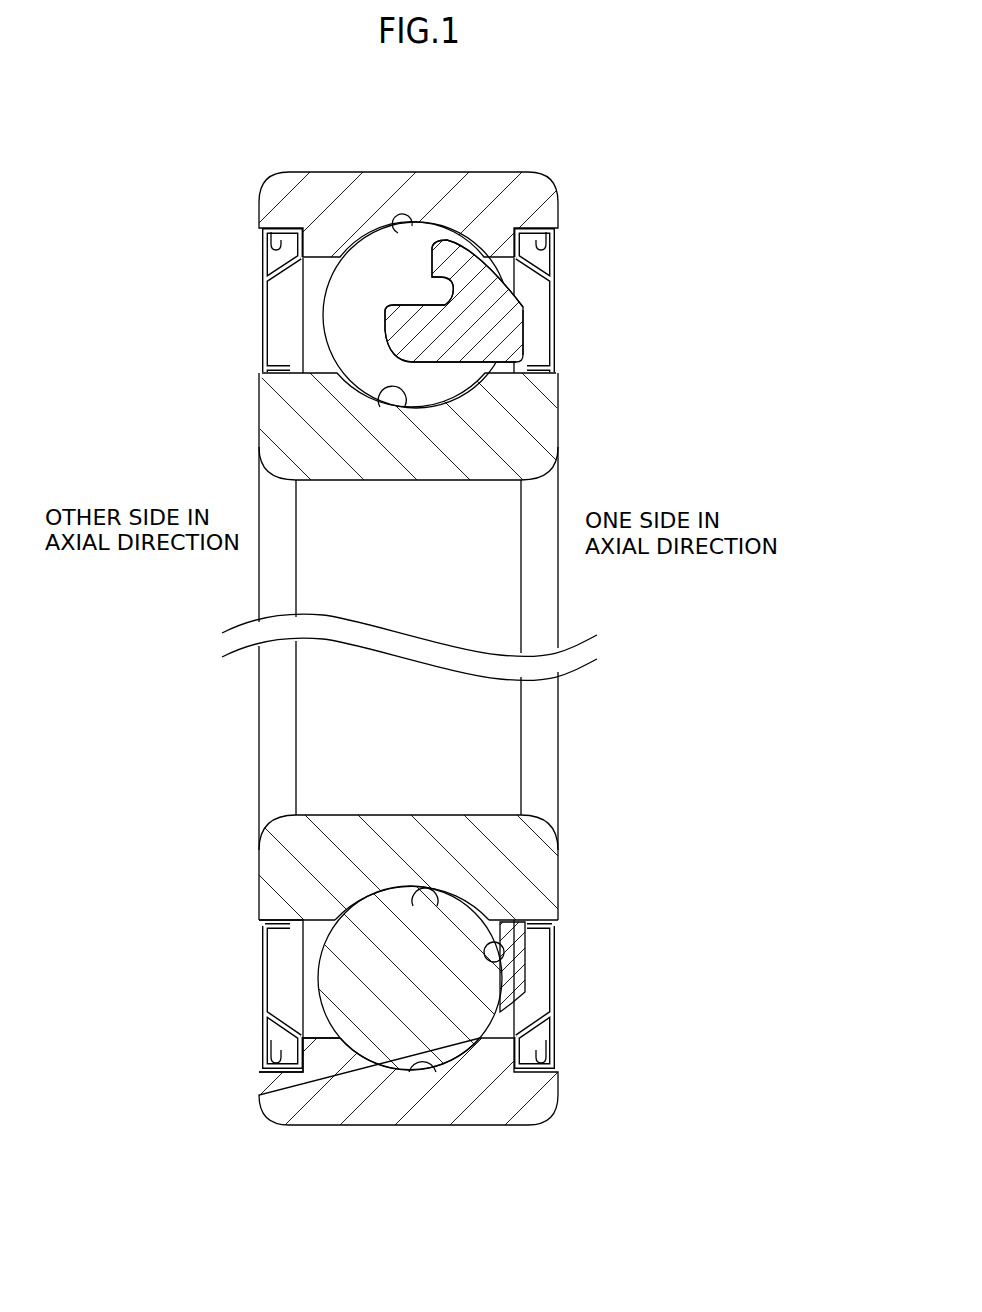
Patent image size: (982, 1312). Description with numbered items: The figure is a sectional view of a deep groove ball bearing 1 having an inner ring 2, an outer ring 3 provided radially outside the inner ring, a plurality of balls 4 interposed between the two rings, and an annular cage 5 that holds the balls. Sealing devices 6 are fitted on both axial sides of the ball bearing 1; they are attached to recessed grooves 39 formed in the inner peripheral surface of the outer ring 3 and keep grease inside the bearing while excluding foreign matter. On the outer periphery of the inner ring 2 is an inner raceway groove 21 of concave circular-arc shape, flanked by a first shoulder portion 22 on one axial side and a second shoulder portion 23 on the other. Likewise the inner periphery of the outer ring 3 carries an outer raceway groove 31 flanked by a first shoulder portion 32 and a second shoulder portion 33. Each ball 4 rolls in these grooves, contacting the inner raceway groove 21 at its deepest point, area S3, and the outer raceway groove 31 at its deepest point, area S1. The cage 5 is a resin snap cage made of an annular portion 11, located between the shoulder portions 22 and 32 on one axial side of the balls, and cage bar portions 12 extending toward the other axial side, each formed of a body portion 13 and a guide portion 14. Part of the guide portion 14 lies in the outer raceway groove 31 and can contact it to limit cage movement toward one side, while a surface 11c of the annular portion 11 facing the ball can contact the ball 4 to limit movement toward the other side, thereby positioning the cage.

The ball bearing 1 is at (505, 167).
The inner ring 2 is at (552, 402).
The outer ring 3 is at (547, 205).
The ball 4 is at (368, 312).
The cage 5 is at (538, 323).
The sealing device 6 is at (257, 311).
The annular portion 11 is at (514, 980).
The surface 11c is at (498, 954).
The cage bar portion 12 is at (478, 138).
The body portion 13 is at (403, 320).
The guide portion 14 is at (452, 255).
The inner raceway groove 21 is at (431, 888).
The first shoulder portion 22 is at (520, 908).
The second shoulder portion 23 is at (298, 908).
The outer raceway groove 31 is at (428, 1074).
The first shoulder portion 32 is at (497, 1057).
The second shoulder portion 33 is at (320, 1057).
The recessed groove 39 is at (277, 1060).
The area S1 is at (400, 236).
The area S3 is at (384, 410).